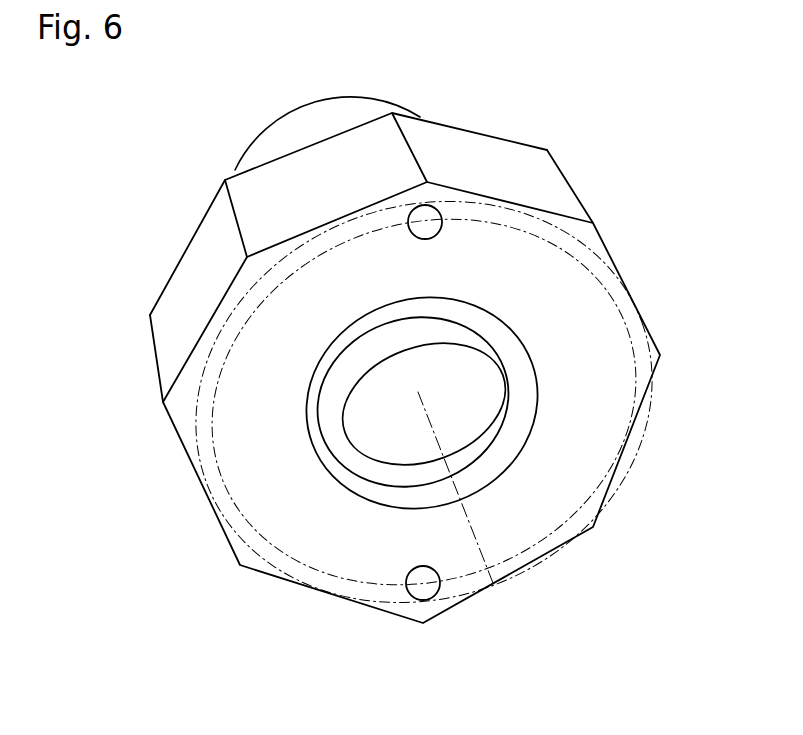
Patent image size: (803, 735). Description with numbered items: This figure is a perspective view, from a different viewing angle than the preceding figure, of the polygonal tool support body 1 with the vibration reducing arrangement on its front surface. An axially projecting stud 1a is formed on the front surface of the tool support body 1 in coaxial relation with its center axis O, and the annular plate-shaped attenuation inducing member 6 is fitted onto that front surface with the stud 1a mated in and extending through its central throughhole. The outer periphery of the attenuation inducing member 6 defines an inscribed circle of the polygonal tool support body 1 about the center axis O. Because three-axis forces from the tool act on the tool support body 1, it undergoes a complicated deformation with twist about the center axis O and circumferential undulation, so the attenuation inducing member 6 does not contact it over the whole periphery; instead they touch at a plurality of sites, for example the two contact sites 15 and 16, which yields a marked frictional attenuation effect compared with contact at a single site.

The tool support body 1 is at (572, 187).
The stud 1a is at (340, 453).
The attenuation inducing member 6 is at (600, 262).
The contact site 15 is at (437, 209).
The contact site 16 is at (405, 586).
The center axis O is at (487, 562).